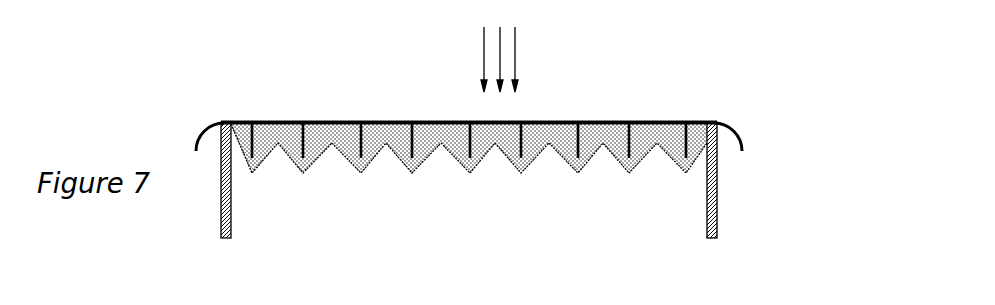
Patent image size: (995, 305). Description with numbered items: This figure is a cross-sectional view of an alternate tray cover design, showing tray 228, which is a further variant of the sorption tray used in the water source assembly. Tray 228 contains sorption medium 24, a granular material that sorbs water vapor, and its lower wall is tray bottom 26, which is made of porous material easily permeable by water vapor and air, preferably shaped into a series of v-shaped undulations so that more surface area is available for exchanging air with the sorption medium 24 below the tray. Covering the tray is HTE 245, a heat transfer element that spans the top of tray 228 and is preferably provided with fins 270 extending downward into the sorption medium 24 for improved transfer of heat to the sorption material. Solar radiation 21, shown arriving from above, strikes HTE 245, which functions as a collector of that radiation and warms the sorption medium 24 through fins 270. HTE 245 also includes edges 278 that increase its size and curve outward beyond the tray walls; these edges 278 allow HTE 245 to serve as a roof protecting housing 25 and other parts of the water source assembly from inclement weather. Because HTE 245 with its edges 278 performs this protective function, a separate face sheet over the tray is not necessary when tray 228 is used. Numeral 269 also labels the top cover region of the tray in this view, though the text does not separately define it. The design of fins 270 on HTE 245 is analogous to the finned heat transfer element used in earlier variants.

The solar radiation 21 is at (526, 56).
The sorption medium 24 is at (378, 121).
The housing 25 is at (721, 176).
The tray bottom 26 is at (533, 162).
The tray 228 is at (428, 159).
The HTE 245 is at (318, 115).
The top plate 269 is at (340, 122).
The fins 270 is at (320, 145).
The edges 278 is at (205, 134).